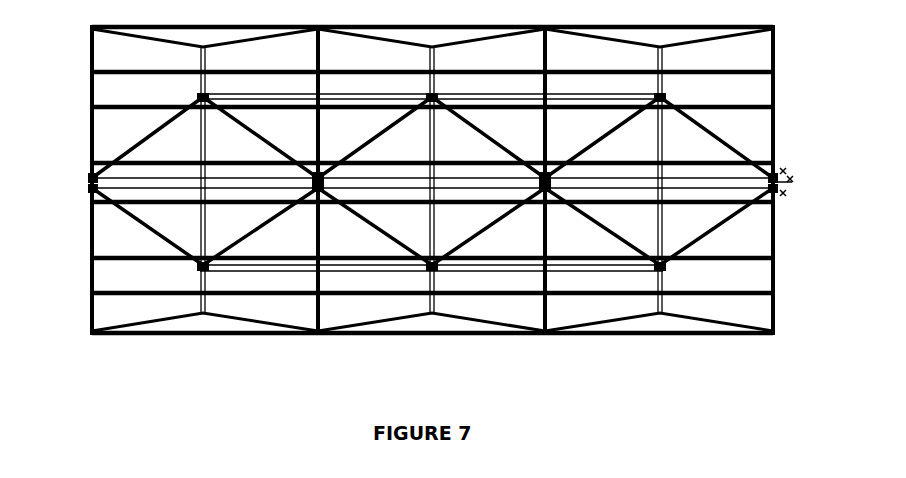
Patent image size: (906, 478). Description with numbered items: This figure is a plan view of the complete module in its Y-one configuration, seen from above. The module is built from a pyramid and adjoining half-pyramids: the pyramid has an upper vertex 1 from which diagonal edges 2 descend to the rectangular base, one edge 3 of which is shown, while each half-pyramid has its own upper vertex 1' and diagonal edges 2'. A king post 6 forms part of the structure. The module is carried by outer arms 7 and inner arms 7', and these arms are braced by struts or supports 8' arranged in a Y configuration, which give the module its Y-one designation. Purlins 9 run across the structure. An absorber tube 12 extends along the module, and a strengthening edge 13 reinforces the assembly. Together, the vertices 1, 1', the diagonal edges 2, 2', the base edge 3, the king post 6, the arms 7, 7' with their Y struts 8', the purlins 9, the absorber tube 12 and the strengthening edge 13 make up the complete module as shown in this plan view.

The upper vertex of the pyramid 1 is at (431, 156).
The upper vertex of the half-pyramid 1' is at (433, 156).
The diagonal edges of the pyramid 2 is at (431, 181).
The diagonal edges of the half-pyramid 2' is at (432, 181).
The edge of the rectangular base of the pyramid 3 is at (288, 268).
The king post 6 is at (788, 168).
The outer arms 7 is at (432, 202).
The inner arms 7' is at (455, 204).
The struts or supports of the arms in Y configuration 8' is at (432, 348).
The purlins 9 is at (92, 158).
The absorber tube 12 is at (90, 182).
The strengthening edge 13 is at (434, 150).